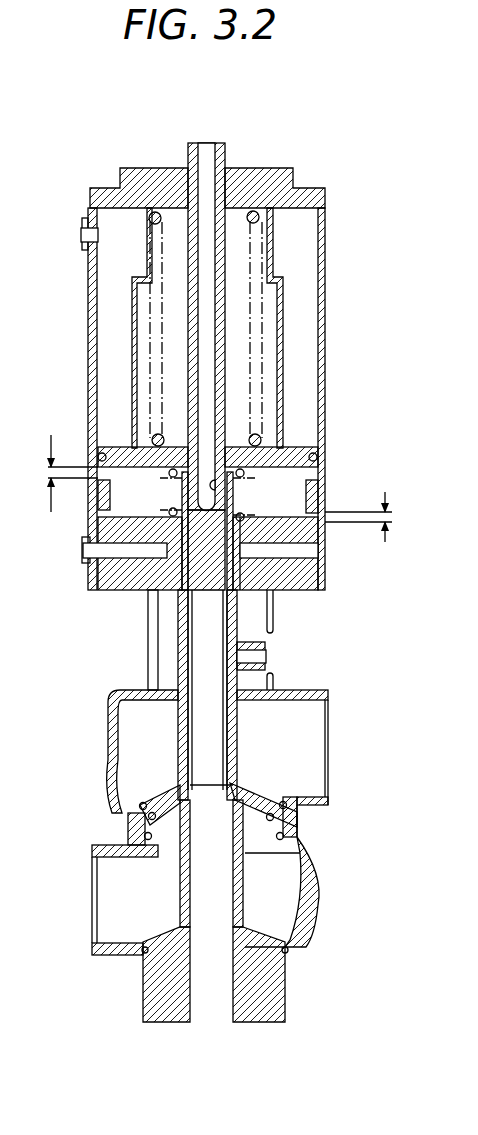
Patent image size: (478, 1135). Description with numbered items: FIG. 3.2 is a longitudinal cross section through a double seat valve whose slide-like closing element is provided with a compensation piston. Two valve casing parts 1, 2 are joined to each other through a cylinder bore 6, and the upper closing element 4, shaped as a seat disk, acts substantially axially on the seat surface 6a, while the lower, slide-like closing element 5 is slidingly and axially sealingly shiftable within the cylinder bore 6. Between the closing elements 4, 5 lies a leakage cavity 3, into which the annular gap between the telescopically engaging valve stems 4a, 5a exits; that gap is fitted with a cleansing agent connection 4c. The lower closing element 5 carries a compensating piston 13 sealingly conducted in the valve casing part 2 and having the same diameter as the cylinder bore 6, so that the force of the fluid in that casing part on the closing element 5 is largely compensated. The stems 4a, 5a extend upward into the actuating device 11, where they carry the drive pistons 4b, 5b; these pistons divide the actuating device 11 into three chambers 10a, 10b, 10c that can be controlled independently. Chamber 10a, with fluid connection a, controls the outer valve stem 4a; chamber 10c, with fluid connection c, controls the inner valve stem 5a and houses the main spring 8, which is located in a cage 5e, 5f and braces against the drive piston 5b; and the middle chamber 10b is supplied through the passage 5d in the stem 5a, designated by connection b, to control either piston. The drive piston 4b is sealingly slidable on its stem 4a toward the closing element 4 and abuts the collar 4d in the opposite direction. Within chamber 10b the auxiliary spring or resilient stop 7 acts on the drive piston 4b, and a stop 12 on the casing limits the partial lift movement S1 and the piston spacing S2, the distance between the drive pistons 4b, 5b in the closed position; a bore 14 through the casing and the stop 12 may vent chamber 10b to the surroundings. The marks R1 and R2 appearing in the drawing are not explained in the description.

The valve casing part 1 is at (292, 751).
The valve casing part 2 is at (120, 909).
The leakage cavity 3 is at (293, 822).
The closing element 4 is at (160, 794).
The valve stem 4a is at (180, 750).
The drive piston 4b is at (300, 545).
The cleansing agent connection 4c is at (262, 652).
The collar 4d is at (152, 591).
The closing element 5 is at (172, 852).
The valve stem 5a is at (205, 720).
The drive piston 5b is at (300, 450).
The passage 5d is at (222, 485).
The cage 5e is at (283, 378).
The cage 5f is at (274, 243).
The cylinder bore 6 is at (130, 838).
The seat surface 6a is at (138, 810).
The auxiliary spring 7 is at (243, 520).
The main spring 8 is at (262, 437).
The chamber 10a is at (300, 567).
The chamber 10b is at (152, 505).
The chamber 10c is at (305, 270).
The actuating device 11 is at (340, 208).
The stop 12 is at (100, 494).
The compensating piston 13 is at (155, 1004).
The bore 14 is at (312, 495).
The fluid connection a is at (80, 547).
The connection b is at (205, 141).
The fluid connection c is at (80, 234).
The flow path R1 is at (280, 657).
The flow path R2 is at (288, 802).
The partial lift movement S1 is at (61, 473).
The distance between drive pistons S2 is at (371, 517).